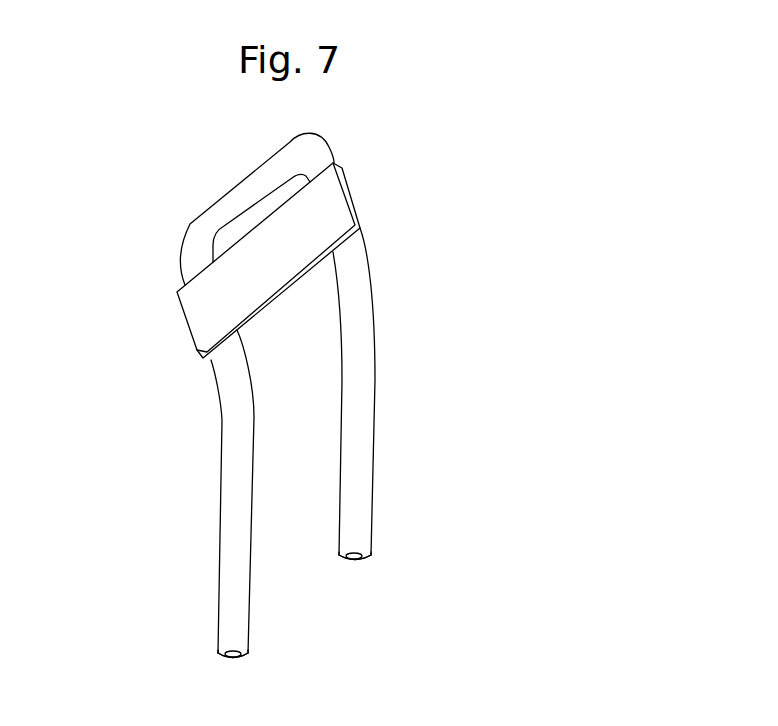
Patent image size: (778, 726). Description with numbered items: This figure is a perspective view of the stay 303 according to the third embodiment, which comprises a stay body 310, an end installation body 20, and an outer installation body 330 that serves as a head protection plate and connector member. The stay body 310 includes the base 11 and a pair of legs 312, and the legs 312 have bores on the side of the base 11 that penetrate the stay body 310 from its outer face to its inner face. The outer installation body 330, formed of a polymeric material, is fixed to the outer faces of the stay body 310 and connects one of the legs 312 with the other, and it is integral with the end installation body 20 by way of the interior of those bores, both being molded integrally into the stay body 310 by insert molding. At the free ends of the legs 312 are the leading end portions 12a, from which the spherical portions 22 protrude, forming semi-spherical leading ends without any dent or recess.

The base 11 is at (240, 185).
The stay 303 is at (414, 186).
The stay body 310 is at (375, 371).
The legs 312 is at (220, 460).
The outer installation body 330 is at (207, 295).
The leading end portions 12a is at (213, 660).
The end installation body 20 is at (291, 622).
The spherical portions 22 is at (233, 657).